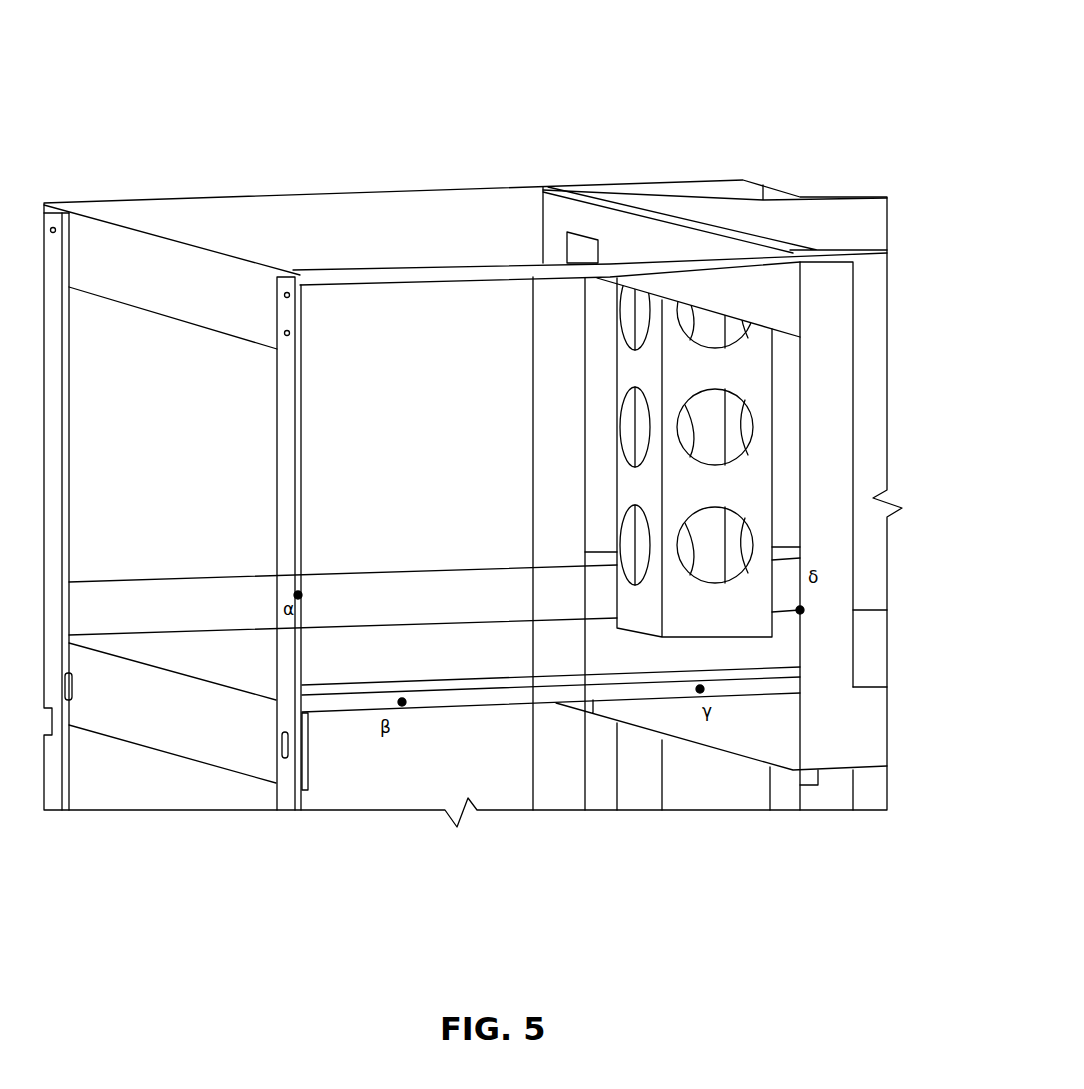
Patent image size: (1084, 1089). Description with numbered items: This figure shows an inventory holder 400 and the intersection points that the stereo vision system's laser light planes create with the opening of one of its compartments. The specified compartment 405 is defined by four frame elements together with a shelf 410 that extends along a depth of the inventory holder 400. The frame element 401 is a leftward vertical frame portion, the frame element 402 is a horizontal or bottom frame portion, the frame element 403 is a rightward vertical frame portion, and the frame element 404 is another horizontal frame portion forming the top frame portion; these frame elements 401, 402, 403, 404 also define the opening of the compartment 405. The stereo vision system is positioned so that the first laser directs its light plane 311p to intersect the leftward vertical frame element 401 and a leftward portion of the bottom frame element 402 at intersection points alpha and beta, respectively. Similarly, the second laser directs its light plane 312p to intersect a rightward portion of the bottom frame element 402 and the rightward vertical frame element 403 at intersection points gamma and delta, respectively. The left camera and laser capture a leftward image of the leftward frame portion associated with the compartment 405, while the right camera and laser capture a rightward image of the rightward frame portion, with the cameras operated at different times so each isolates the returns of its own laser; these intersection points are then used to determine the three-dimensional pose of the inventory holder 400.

The inventory holder 400 is at (795, 86).
The frame element 401 is at (316, 374).
The frame element 402 is at (350, 728).
The frame element 403 is at (848, 410).
The frame element 404 is at (410, 252).
The compartment 405 is at (492, 330).
The shelf 410 is at (432, 635).
The light plane 311p is at (318, 550).
The light plane 312p is at (525, 546).